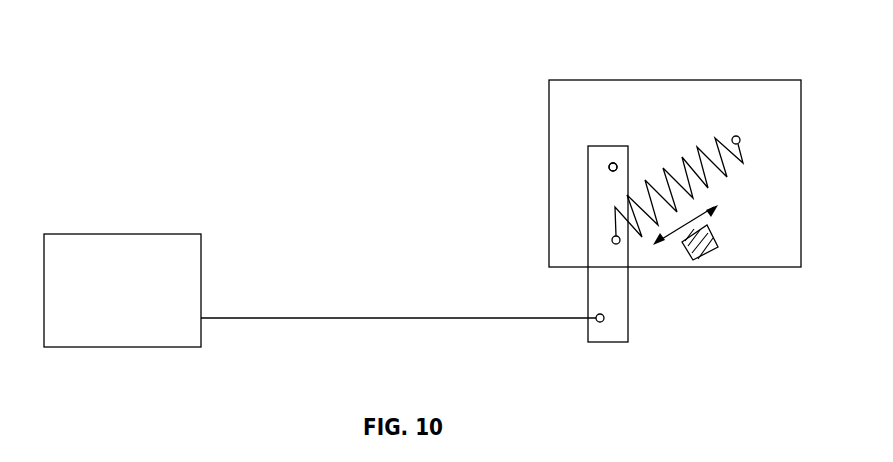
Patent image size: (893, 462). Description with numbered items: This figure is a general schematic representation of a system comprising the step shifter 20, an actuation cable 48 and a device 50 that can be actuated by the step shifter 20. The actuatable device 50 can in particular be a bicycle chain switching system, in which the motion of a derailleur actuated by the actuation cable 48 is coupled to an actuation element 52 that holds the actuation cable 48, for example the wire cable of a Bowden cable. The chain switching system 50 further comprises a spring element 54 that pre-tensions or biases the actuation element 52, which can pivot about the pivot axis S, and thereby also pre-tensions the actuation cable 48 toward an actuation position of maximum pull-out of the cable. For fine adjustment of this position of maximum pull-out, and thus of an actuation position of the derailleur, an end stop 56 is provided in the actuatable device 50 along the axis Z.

The step shifter 20 is at (122, 208).
The actuation cable 48 is at (317, 318).
The actuatable device 50 is at (614, 64).
The actuation element 52 is at (622, 325).
The spring element 54 is at (713, 140).
The end stop 56 is at (705, 256).
The pivot axis S is at (608, 167).
The axis Z is at (706, 220).